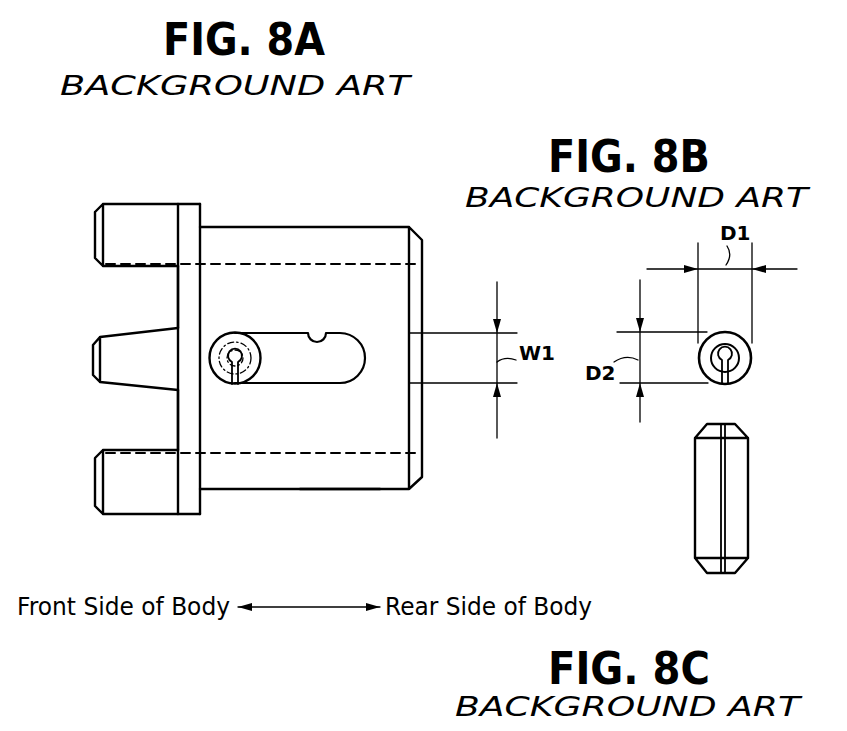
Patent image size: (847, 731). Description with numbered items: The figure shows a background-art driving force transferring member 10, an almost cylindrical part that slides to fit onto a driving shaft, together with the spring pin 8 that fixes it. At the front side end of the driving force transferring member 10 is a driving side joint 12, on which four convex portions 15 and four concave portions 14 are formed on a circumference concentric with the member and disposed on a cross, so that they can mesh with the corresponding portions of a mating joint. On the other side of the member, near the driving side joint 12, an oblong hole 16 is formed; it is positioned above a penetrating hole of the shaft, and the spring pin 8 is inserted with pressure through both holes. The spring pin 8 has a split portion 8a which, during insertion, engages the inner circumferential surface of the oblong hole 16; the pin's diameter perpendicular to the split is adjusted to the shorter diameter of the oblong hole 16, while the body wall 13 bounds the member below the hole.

In FIG. 8A, the driving force transferring member 10 is at (236, 188).
In FIG. 8A, the driving side joint 12 is at (108, 359).
In FIG. 8A, the body lower wall 13 is at (296, 491).
In FIG. 8A, the concave portion 14 is at (178, 298).
In FIG. 8A, the convex portion 15 is at (110, 243).
In FIG. 8A, the oblong hole 16 is at (327, 343).
In FIG. 8A, the spring pin 8 is at (262, 355).
In FIG. 8B, the spring pin 8 is at (752, 356).
In FIG. 8C, the spring pin 8 is at (748, 474).
In FIG. 8A, the split portion 8a is at (238, 370).
In FIG. 8B, the split portion 8a is at (728, 384).
In FIG. 8C, the split portion 8a is at (723, 527).